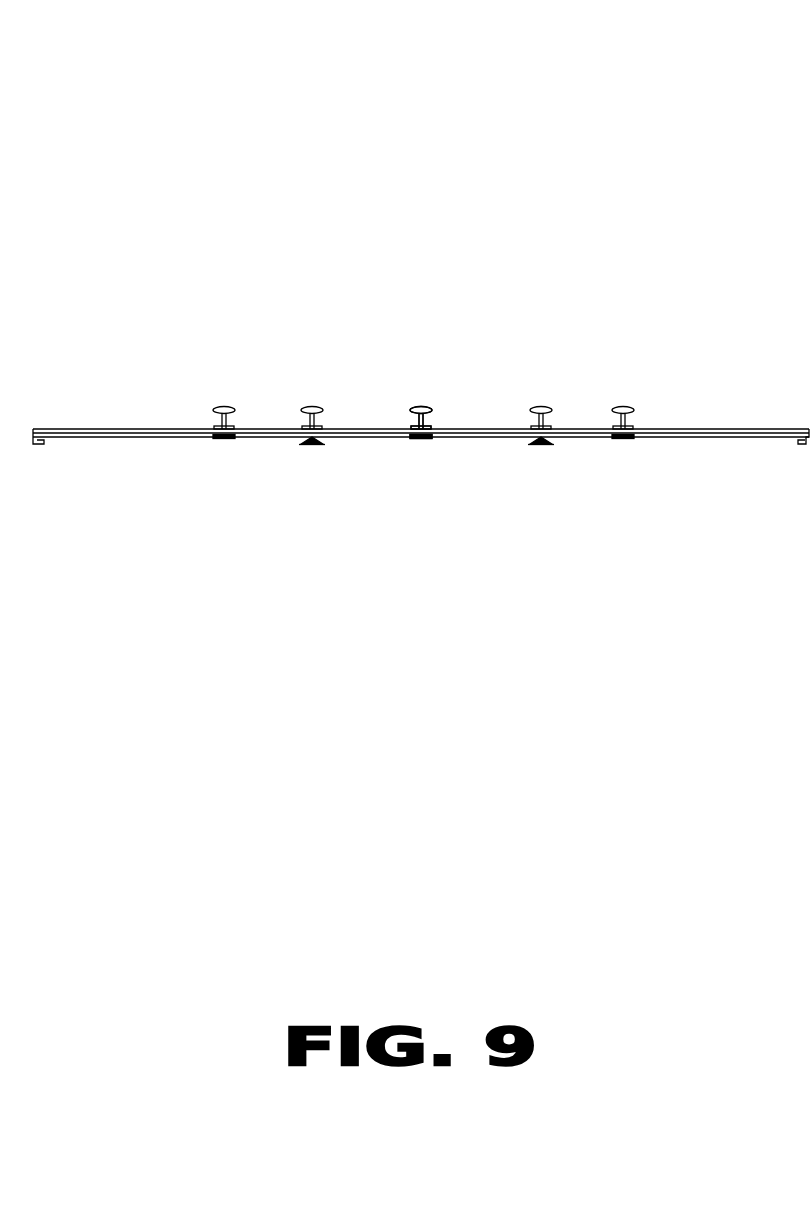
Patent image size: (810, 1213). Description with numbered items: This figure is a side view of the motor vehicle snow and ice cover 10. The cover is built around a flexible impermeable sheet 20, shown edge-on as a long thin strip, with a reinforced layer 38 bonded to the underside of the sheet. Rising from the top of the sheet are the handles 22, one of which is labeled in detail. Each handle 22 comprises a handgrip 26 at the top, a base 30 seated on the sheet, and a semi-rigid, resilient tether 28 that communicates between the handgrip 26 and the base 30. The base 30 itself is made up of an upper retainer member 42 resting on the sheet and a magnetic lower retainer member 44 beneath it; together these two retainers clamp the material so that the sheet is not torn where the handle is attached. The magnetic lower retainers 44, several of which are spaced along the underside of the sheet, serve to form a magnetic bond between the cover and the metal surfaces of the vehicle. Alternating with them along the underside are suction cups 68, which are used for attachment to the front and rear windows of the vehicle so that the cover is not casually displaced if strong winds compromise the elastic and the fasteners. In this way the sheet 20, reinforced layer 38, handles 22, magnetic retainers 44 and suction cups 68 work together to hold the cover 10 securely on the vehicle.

The motor vehicle snow and ice cover 10 is at (657, 93).
The flexible impermeable sheet 20 is at (136, 428).
The handle 22 is at (422, 395).
The handgrip 26 is at (430, 410).
The semi-rigid, resilient tether 28 is at (430, 424).
The base 30 is at (414, 428).
The reinforced layer 38 is at (188, 436).
The upper retainer member 42 is at (433, 426).
The magnetic lower retainer member 44 is at (215, 444).
The suction cup 68 is at (308, 446).